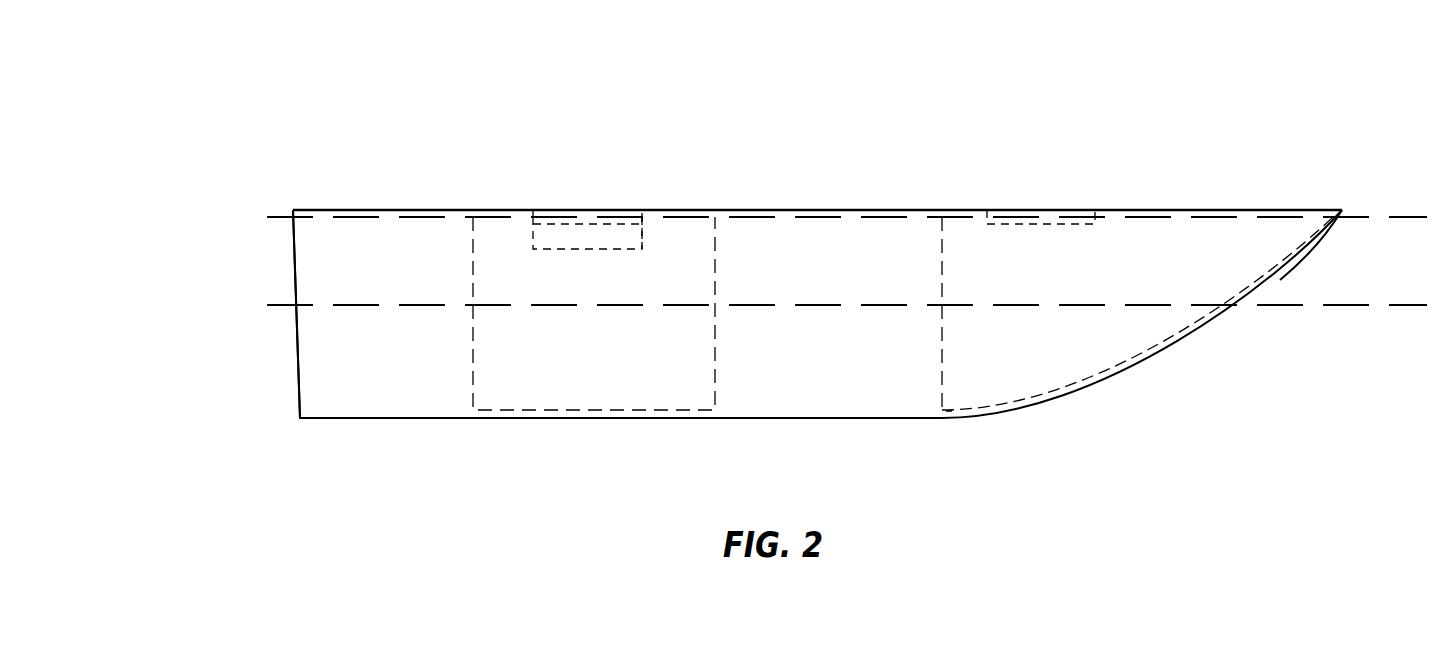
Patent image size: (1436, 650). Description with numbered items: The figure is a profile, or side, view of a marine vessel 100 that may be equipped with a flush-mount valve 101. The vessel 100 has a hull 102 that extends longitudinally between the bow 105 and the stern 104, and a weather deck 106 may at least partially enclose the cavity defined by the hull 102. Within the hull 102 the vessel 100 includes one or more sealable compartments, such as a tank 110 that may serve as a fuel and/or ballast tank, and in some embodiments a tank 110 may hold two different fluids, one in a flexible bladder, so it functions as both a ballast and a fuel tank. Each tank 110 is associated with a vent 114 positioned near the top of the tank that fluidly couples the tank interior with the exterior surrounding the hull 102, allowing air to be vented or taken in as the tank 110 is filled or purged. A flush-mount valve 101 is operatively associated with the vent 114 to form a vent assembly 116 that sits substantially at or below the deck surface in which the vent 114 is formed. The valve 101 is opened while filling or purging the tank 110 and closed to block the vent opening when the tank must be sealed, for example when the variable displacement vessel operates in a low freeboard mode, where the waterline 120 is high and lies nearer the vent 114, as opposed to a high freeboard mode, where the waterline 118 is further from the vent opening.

The marine vessel 100 is at (1112, 80).
The flush-mount valve 101 is at (532, 240).
The hull 102 is at (803, 208).
The stern 104 is at (298, 380).
The bow 105 is at (1342, 209).
The weather deck 106 is at (1198, 209).
The tank 110 is at (472, 345).
The vent 114 is at (590, 222).
The vent assembly 116 is at (654, 240).
The waterline 118 is at (1400, 307).
The waterline 120 is at (1393, 217).